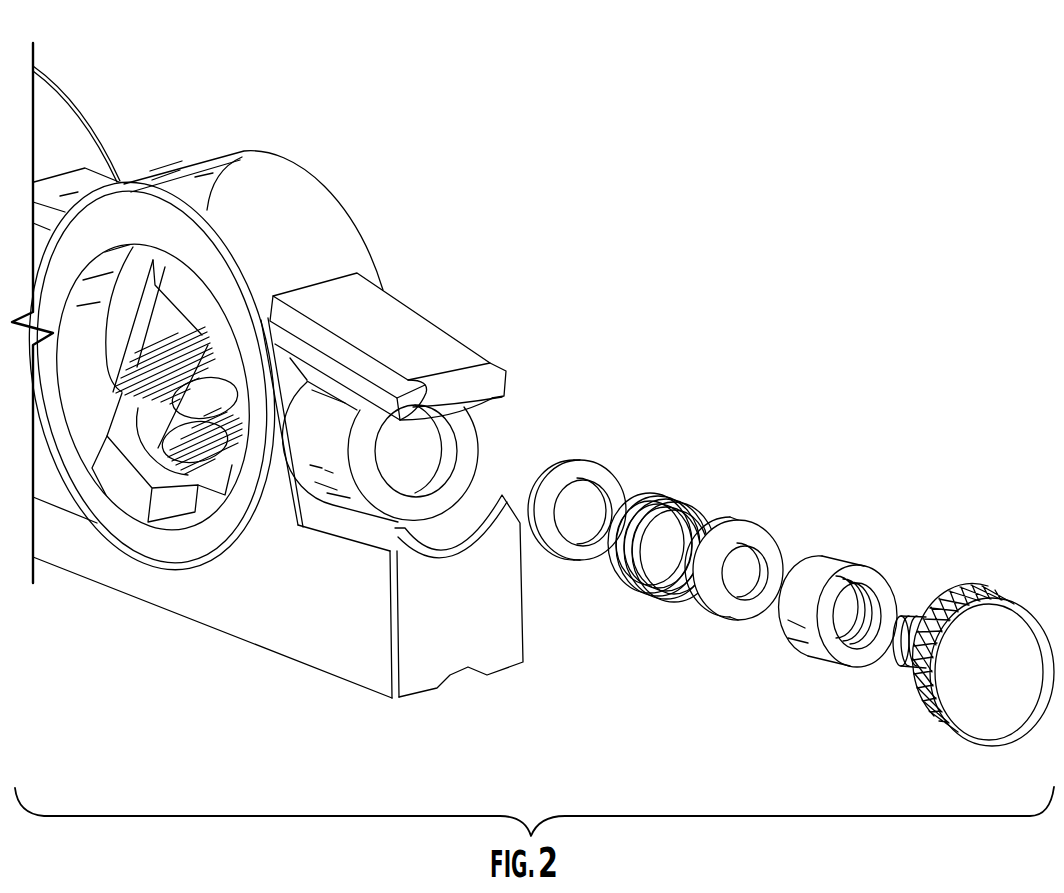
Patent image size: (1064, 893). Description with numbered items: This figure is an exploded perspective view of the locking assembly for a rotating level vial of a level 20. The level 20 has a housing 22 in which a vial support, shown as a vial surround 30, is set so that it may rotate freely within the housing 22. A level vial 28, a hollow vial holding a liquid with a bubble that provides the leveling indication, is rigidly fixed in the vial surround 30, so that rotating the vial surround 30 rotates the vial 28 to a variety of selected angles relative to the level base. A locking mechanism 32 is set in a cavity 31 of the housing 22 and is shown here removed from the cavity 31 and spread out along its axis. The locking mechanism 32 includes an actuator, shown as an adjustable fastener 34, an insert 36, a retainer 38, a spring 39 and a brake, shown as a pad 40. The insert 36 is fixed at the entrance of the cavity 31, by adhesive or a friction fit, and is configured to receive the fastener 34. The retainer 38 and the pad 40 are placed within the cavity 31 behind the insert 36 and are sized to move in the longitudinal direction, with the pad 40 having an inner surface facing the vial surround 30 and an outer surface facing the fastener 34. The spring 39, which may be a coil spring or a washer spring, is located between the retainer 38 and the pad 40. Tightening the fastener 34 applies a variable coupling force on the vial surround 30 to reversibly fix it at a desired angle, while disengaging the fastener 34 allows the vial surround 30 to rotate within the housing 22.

The level 20 is at (594, 246).
The housing 22 is at (268, 164).
The level vial 28 is at (188, 448).
The vial surround 30 is at (212, 543).
The cavity 31 is at (420, 478).
The locking mechanism 32 is at (914, 633).
The adjustable fastener 34 is at (967, 694).
The insert 36 is at (817, 650).
The retainer 38 is at (737, 613).
The spring 39 is at (665, 492).
The pad 40 is at (574, 553).